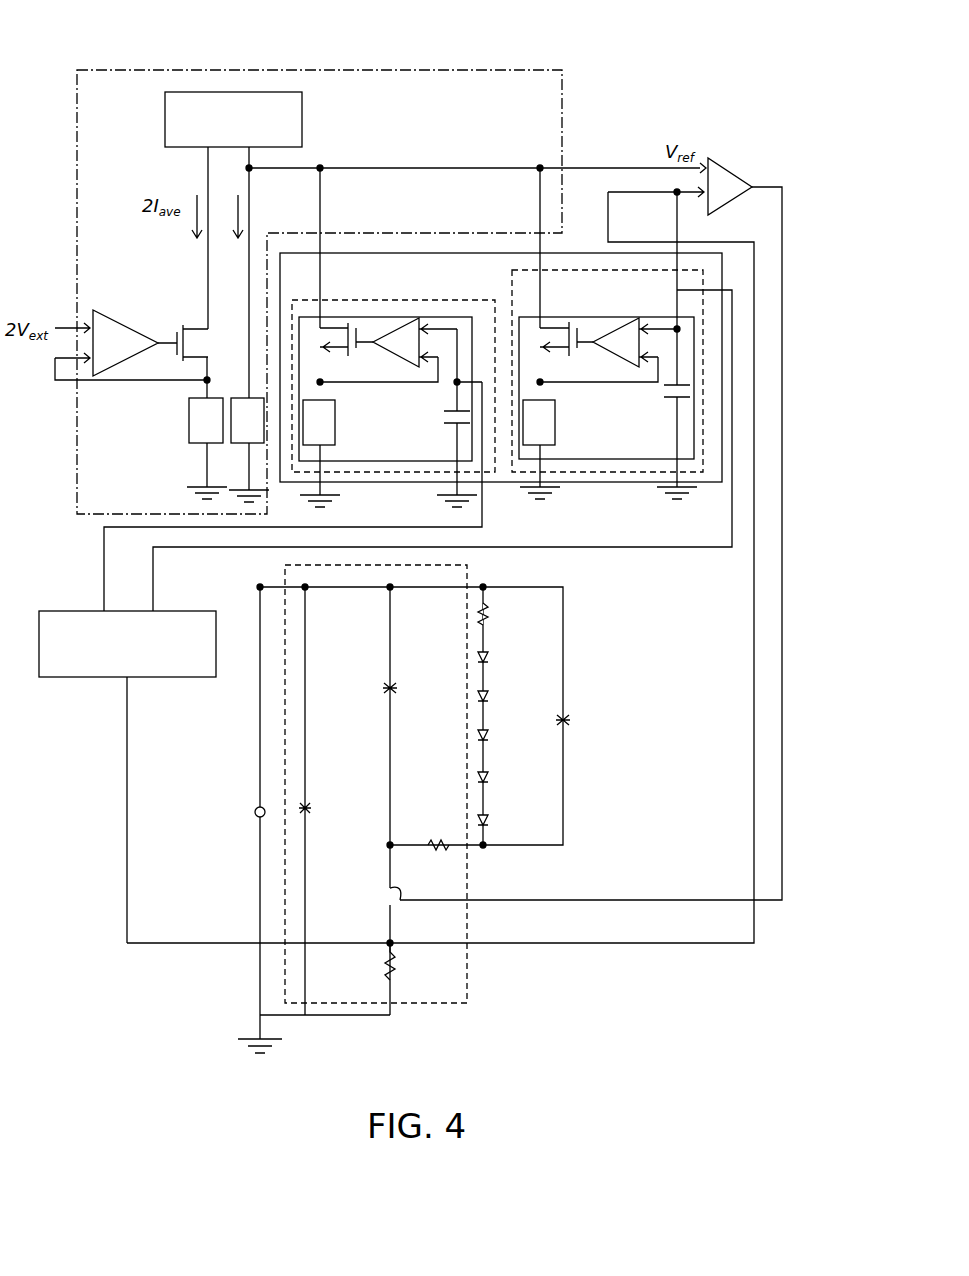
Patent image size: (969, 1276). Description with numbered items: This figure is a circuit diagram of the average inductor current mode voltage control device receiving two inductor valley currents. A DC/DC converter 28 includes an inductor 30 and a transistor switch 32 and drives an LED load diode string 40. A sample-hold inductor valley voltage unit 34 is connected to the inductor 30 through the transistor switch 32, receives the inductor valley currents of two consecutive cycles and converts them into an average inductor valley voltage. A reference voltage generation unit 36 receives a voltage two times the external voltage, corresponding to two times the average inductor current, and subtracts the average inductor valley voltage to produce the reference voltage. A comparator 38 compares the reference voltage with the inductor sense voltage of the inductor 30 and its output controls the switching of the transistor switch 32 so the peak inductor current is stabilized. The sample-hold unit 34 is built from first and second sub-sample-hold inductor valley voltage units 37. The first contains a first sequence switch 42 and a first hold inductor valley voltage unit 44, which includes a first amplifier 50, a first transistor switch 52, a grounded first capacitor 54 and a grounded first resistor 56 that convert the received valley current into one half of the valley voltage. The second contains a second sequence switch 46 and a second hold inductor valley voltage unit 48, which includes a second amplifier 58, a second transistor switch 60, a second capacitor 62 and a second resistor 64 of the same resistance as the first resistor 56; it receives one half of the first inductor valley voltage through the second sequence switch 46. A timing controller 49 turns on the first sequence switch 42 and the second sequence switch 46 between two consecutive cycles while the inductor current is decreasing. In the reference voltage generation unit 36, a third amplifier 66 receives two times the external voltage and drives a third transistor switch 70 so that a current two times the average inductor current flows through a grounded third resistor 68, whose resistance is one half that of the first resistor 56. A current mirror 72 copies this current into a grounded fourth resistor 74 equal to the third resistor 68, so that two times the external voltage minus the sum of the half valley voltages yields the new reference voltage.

The DC/DC converter 28 is at (285, 693).
The inductor 30 is at (440, 843).
The transistor switch 32 is at (392, 895).
The sample-hold inductor valley voltage unit 34 is at (483, 253).
The reference voltage generation unit 36 is at (315, 70).
The sub-sample-hold inductor valley voltage unit 37 is at (435, 300).
The comparator 38 is at (730, 158).
The LED load diode string 40 is at (503, 704).
The first sequence switch 42 is at (675, 292).
The first hold inductor valley voltage unit 44 is at (622, 460).
The second sequence switch 46 is at (478, 380).
The second hold inductor valley voltage unit 48 is at (388, 472).
The timing controller 49 is at (85, 678).
The first amplifier 50 is at (605, 338).
The first transistor switch 52 is at (548, 328).
The first capacitor 54 is at (668, 400).
The first resistor 56 is at (557, 428).
The second amplifier 58 is at (385, 338).
The second transistor switch 60 is at (325, 328).
The second capacitor 62 is at (445, 415).
The second resistor 64 is at (337, 428).
The third amplifier 66 is at (120, 322).
The third resistor 68 is at (190, 430).
The third transistor switch 70 is at (197, 329).
The current mirror 72 is at (210, 92).
The fourth resistor 74 is at (245, 398).